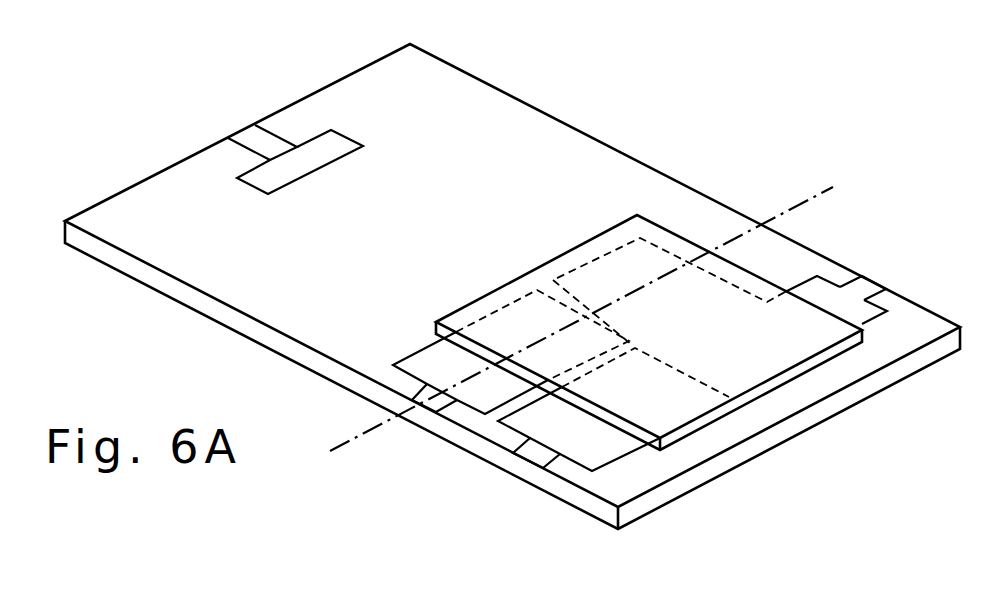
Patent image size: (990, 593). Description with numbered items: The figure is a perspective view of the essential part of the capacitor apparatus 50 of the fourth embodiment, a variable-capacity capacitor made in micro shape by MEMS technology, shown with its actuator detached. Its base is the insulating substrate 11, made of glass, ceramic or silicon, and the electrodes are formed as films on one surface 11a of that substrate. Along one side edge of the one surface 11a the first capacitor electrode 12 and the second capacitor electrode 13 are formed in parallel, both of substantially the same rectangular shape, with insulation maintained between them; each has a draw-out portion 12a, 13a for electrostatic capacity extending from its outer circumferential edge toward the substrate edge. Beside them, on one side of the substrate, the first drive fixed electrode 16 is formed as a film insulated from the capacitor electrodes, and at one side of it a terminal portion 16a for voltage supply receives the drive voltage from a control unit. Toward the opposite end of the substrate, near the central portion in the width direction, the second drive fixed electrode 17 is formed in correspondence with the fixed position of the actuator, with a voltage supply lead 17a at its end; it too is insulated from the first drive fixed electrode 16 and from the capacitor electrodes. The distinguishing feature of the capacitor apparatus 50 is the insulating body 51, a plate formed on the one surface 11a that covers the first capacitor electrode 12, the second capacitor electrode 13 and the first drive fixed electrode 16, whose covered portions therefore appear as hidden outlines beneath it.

The insulating substrate 11 is at (110, 198).
The one surface 11a is at (190, 184).
The first capacitor electrode 12 is at (572, 437).
The draw-out portion 12a is at (530, 450).
The second capacitor electrode 13 is at (474, 400).
The draw-out portion 13a is at (430, 408).
The first drive fixed electrode 16 is at (866, 313).
The terminal portion for voltage supply 16a is at (868, 287).
The second drive fixed electrode 17 is at (314, 150).
The voltage supply lead 17a is at (252, 137).
The capacitor apparatus 50 is at (573, 98).
The insulating body 51 is at (678, 218).